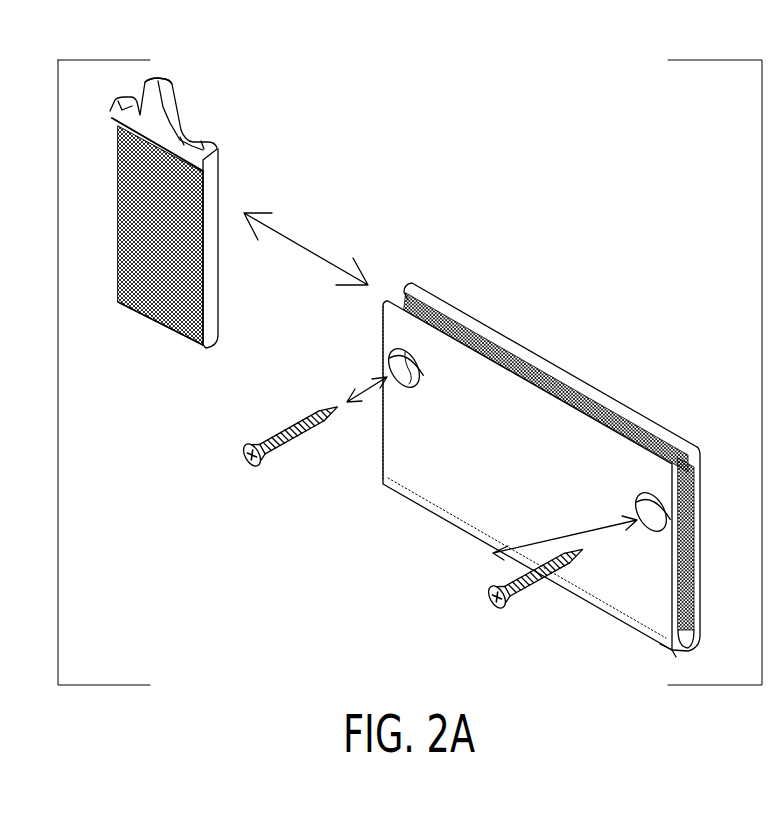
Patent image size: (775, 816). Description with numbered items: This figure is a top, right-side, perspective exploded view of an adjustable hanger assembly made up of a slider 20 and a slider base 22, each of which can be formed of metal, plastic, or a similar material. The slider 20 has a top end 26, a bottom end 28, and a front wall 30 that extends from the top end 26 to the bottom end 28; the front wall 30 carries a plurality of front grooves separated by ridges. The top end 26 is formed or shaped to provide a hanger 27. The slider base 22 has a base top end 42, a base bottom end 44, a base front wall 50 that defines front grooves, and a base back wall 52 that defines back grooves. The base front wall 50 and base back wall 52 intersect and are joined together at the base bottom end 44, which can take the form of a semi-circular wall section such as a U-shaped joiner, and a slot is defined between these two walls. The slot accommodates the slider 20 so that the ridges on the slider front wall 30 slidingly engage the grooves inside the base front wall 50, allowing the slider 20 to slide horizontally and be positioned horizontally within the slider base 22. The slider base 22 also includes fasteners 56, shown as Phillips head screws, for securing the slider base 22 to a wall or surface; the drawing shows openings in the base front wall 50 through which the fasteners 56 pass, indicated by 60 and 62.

The slider 20 is at (192, 221).
The slider base 22 is at (522, 490).
The top end 26 is at (160, 81).
The hanger 27 is at (172, 100).
The bottom end 28 is at (205, 352).
The front wall 30 is at (143, 288).
The base top end 42 is at (552, 370).
The base bottom end 44 is at (676, 655).
The base front wall 50 is at (672, 480).
The base back wall 52 is at (697, 580).
The fasteners 56 is at (245, 463).
The mounting hole 60 is at (400, 392).
The mounting hole 62 is at (652, 527).